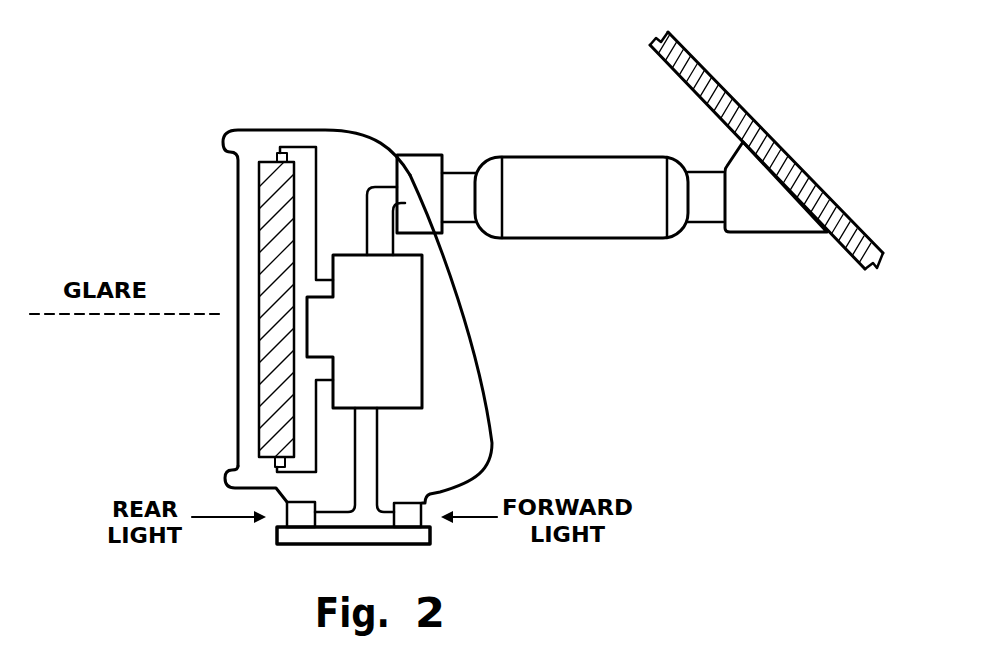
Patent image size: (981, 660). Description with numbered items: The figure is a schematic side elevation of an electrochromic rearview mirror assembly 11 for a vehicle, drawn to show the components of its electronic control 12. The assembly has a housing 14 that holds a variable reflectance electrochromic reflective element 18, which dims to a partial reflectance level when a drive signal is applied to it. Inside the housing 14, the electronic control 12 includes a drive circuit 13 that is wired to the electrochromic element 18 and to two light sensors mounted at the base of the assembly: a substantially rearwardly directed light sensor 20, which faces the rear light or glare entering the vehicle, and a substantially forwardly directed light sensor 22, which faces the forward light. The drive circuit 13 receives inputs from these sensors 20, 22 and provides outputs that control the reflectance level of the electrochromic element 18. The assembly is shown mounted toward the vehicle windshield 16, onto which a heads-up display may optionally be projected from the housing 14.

The electrochromic rearview mirror assembly 11 is at (233, 130).
The electronic control 12 is at (492, 384).
The drive circuit 13 is at (423, 328).
The housing 14 is at (355, 133).
The vehicle windshield 16 is at (728, 92).
The electrochromic reflective element 18 is at (256, 250).
The rearwardly directed light sensor 20 is at (283, 518).
The forwardly directed light sensor 22 is at (423, 520).